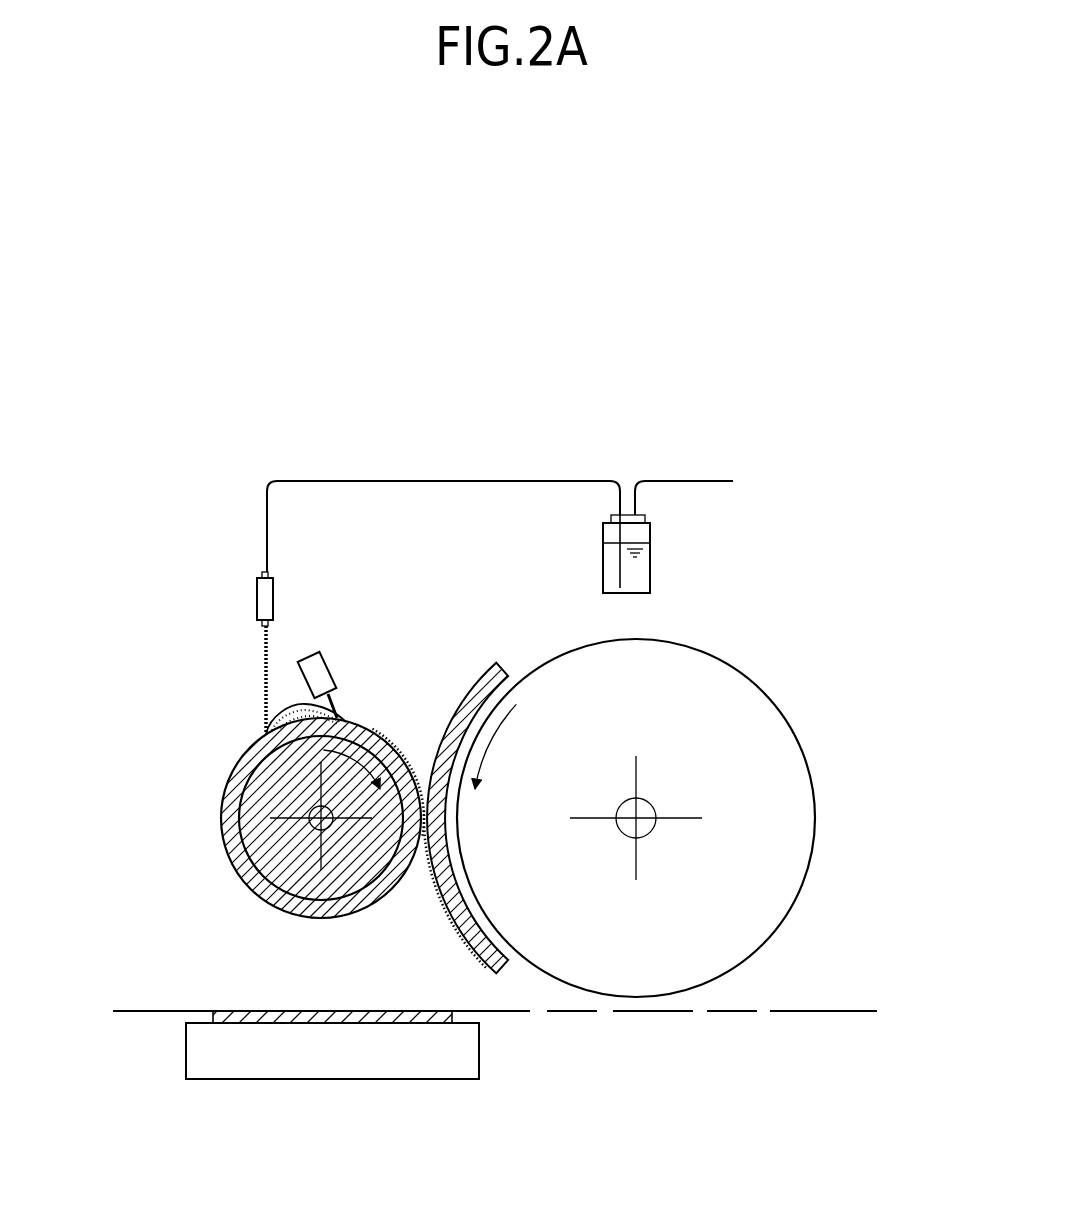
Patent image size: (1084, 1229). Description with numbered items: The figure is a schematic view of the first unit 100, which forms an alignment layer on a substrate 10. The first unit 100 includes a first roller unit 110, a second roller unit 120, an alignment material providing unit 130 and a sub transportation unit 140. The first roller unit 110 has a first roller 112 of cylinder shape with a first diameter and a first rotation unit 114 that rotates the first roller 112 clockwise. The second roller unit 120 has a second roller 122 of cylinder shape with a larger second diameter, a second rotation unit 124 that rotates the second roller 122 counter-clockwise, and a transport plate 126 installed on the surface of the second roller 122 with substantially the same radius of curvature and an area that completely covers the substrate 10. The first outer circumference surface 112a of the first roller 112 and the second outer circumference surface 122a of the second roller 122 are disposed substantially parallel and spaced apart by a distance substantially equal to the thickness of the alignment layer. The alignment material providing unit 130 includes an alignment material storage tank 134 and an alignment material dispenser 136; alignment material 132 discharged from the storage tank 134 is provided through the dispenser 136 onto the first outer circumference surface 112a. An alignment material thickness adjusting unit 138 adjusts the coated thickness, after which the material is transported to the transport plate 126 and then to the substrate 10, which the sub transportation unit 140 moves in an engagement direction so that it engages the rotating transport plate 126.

The first unit 100 is at (636, 452).
The substrate 10 is at (240, 1016).
The first roller unit 110 is at (213, 812).
The first roller 112 is at (307, 903).
The first outer circumference surface 112a is at (226, 853).
The first rotation unit 114 is at (327, 826).
The second roller unit 120 is at (806, 733).
The second roller 122 is at (775, 895).
The second outer circumference surface 122a is at (810, 775).
The second rotation unit 124 is at (655, 810).
The transport plate 126 is at (487, 666).
The alignment material providing unit 130 is at (489, 477).
The alignment material 132 is at (264, 662).
The alignment material storage tank 134 is at (652, 560).
The alignment material dispenser 136 is at (262, 595).
The alignment material thickness adjusting unit 138 is at (324, 668).
The sub transportation unit 140 is at (467, 1052).